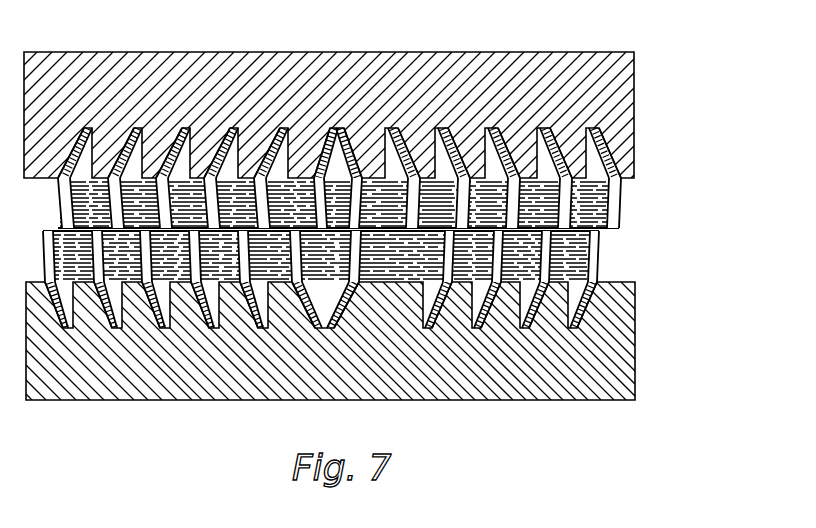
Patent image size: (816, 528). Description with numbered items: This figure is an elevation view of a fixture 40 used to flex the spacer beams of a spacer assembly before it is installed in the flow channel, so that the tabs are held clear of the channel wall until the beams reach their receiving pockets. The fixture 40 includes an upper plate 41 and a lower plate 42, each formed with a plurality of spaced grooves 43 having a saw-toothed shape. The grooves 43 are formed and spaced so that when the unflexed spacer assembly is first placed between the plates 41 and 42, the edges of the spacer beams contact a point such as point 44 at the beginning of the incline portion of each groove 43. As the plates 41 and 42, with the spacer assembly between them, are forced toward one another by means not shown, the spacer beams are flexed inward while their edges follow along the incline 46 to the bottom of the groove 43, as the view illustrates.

The fixture 40 is at (378, 203).
The upper plate 41 is at (634, 143).
The lower plate 42 is at (636, 360).
The grooves 43 is at (597, 176).
The point 44 is at (377, 178).
The incline 46 is at (616, 160).